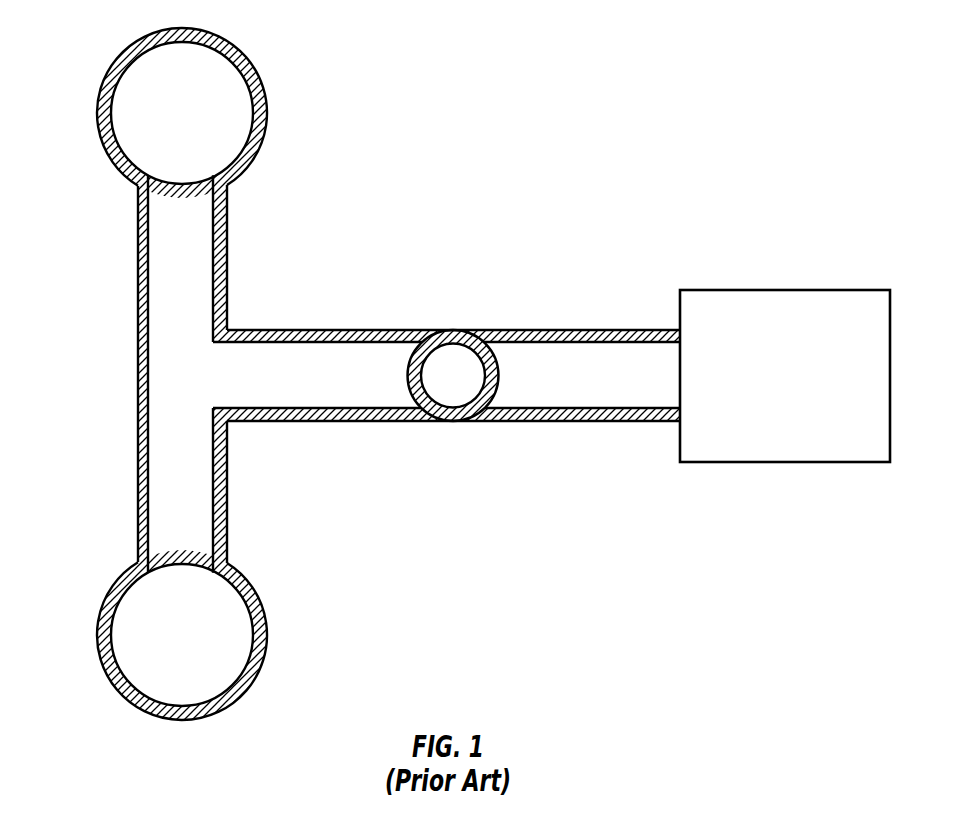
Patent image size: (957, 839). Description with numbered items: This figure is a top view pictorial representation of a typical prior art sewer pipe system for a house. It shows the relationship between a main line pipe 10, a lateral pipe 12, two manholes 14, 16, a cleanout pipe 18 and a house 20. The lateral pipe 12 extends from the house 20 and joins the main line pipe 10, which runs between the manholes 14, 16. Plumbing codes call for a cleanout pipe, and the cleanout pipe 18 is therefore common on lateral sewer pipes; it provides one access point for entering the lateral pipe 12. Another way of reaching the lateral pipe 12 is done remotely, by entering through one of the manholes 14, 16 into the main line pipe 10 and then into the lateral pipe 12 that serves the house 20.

The main line pipe 10 is at (231, 289).
The lateral pipe 12 is at (369, 327).
The manhole 14 is at (100, 97).
The manhole 16 is at (98, 625).
The cleanout pipe 18 is at (441, 330).
The house 20 is at (801, 389).